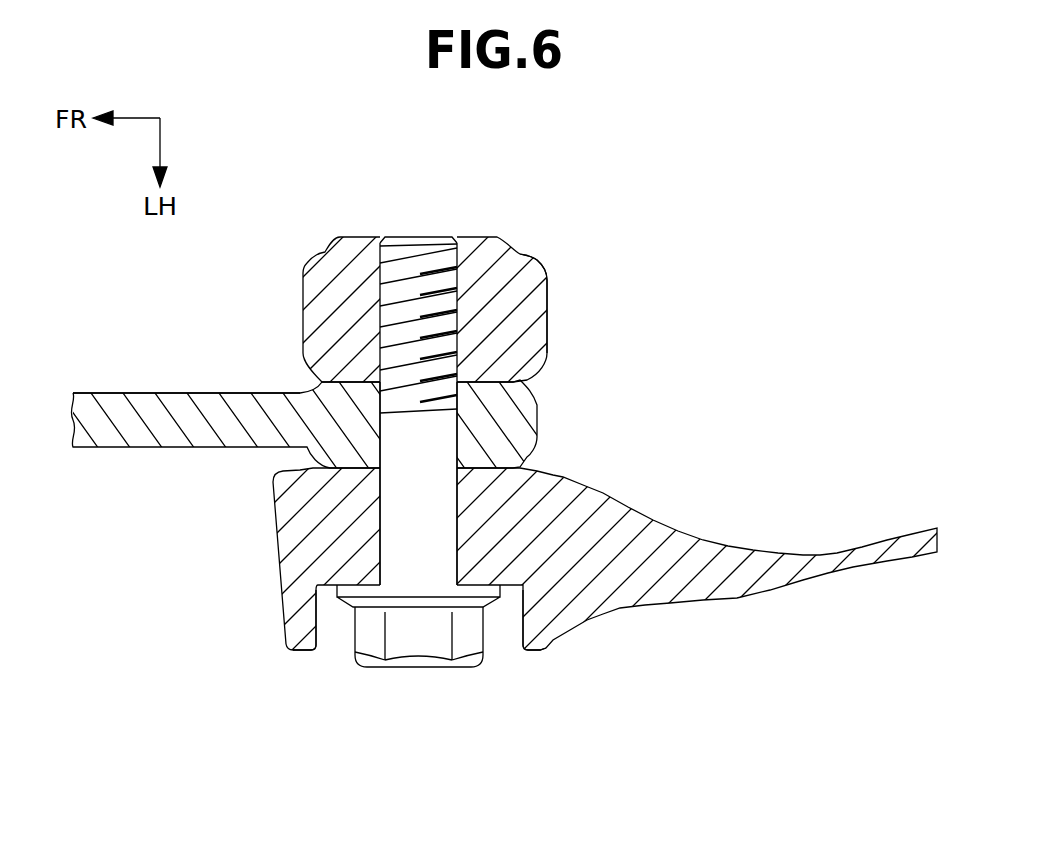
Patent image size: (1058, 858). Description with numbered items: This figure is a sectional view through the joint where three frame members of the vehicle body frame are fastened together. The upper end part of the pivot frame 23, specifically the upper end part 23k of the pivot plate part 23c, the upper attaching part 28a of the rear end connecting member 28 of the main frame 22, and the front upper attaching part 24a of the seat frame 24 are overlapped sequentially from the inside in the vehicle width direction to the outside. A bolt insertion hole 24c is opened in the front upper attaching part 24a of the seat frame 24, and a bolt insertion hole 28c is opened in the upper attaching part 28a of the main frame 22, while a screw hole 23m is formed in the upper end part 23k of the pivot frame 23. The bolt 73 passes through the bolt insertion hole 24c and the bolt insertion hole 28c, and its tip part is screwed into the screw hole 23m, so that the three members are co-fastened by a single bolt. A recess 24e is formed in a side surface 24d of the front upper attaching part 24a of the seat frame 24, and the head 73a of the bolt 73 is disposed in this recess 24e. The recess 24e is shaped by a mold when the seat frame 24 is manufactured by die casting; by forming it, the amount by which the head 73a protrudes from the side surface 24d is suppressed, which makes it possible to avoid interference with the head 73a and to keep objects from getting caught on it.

The main frame 22 is at (118, 392).
The rear end connecting member 28 is at (167, 398).
The upper attaching part 28a is at (220, 392).
The bolt insertion hole 28c is at (456, 440).
The pivot frame 23 is at (522, 254).
The screw hole 23m is at (380, 277).
The pivot plate part 23c is at (538, 278).
The upper end part 23k is at (527, 315).
The seat frame 24 is at (738, 600).
The front upper attaching part 24a is at (593, 607).
The bolt insertion hole 24c is at (381, 530).
The side surface 24d is at (531, 650).
The recess 24e is at (320, 617).
The bolt 73 is at (418, 652).
The head 73a is at (433, 657).